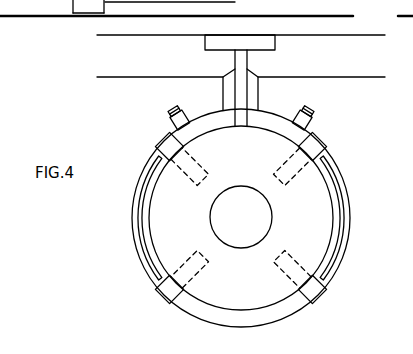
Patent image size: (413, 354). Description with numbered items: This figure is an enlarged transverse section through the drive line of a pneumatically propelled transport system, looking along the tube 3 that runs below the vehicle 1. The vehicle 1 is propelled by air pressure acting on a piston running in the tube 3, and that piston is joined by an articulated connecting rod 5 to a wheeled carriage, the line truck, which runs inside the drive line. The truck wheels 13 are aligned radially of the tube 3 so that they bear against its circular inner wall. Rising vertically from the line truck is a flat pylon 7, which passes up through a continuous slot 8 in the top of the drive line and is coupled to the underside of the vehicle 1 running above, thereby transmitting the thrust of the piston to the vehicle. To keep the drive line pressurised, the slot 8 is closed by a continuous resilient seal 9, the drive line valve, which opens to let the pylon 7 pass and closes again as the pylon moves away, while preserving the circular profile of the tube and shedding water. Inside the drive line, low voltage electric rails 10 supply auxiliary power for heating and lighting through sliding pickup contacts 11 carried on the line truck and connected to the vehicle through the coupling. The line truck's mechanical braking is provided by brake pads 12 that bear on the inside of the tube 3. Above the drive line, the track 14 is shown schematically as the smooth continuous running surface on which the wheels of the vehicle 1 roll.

The vehicle 1 is at (340, 38).
The tube 3 is at (296, 313).
The articulated connecting rod 5 is at (273, 213).
The pylon 7 is at (250, 60).
The slot 8 is at (222, 91).
The seal 9 is at (252, 91).
The electric rails 10 is at (180, 114).
The sliding pickup contacts 11 is at (292, 128).
The brake pads 12 is at (132, 214).
The truck wheels 13 is at (166, 145).
The track 14 is at (130, 76).